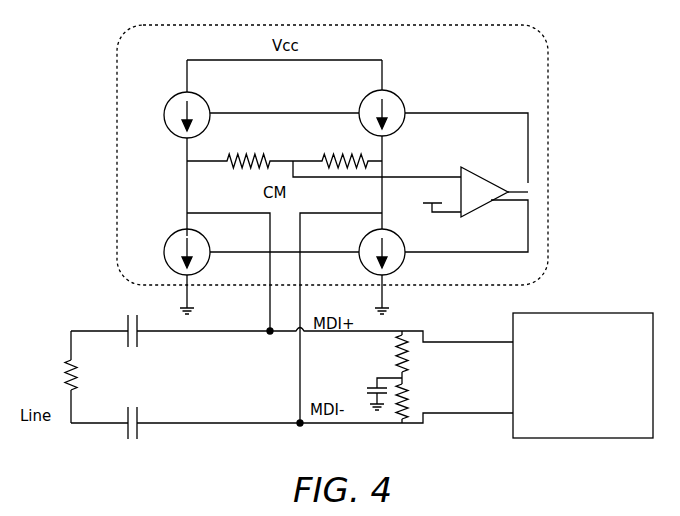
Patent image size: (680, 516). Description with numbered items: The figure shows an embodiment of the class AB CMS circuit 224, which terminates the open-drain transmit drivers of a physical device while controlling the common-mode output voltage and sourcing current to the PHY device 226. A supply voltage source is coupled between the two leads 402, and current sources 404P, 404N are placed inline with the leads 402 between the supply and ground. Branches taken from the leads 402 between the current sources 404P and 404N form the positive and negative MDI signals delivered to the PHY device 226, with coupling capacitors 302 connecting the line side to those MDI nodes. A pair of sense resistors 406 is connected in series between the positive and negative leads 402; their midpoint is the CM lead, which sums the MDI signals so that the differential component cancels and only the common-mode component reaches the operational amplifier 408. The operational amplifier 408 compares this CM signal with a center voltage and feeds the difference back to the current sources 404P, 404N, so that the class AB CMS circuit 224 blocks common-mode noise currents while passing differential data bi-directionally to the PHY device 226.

The class AB CMS circuit 224 is at (117, 106).
The PHY device 226 is at (580, 313).
The capacitor 302 is at (126, 320).
The lead 402 is at (187, 196).
The current source 404P is at (169, 106).
The current source 404N is at (168, 244).
The sense resistor 406 is at (253, 156).
The operational amplifier 408 is at (490, 211).